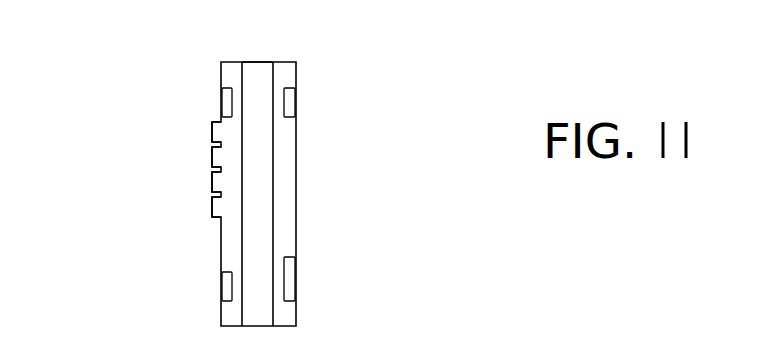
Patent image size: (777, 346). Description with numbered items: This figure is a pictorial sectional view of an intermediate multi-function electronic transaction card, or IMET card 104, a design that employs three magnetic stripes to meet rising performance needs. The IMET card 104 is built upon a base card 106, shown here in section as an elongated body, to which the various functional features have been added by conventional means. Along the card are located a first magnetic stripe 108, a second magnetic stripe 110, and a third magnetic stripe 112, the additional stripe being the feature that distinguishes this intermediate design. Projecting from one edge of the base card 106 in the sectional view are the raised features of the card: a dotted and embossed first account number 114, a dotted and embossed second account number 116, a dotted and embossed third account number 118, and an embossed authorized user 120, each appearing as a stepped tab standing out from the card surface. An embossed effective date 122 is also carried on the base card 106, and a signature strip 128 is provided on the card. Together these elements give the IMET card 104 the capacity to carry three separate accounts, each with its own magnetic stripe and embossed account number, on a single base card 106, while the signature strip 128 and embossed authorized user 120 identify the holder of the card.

The IMET card 104 is at (322, 175).
The base card 106 is at (257, 62).
The first magnetic stripe 108 is at (222, 100).
The second magnetic stripe 110 is at (222, 285).
The third magnetic stripe 112 is at (296, 100).
The dotted and embossed first account number 114 is at (212, 130).
The dotted and embossed second account number 116 is at (212, 161).
The dotted and embossed third account number 118 is at (212, 186).
The embossed authorized user 120 is at (212, 210).
The embossed effective date 122 is at (372, 0).
The signature strip 128 is at (296, 282).